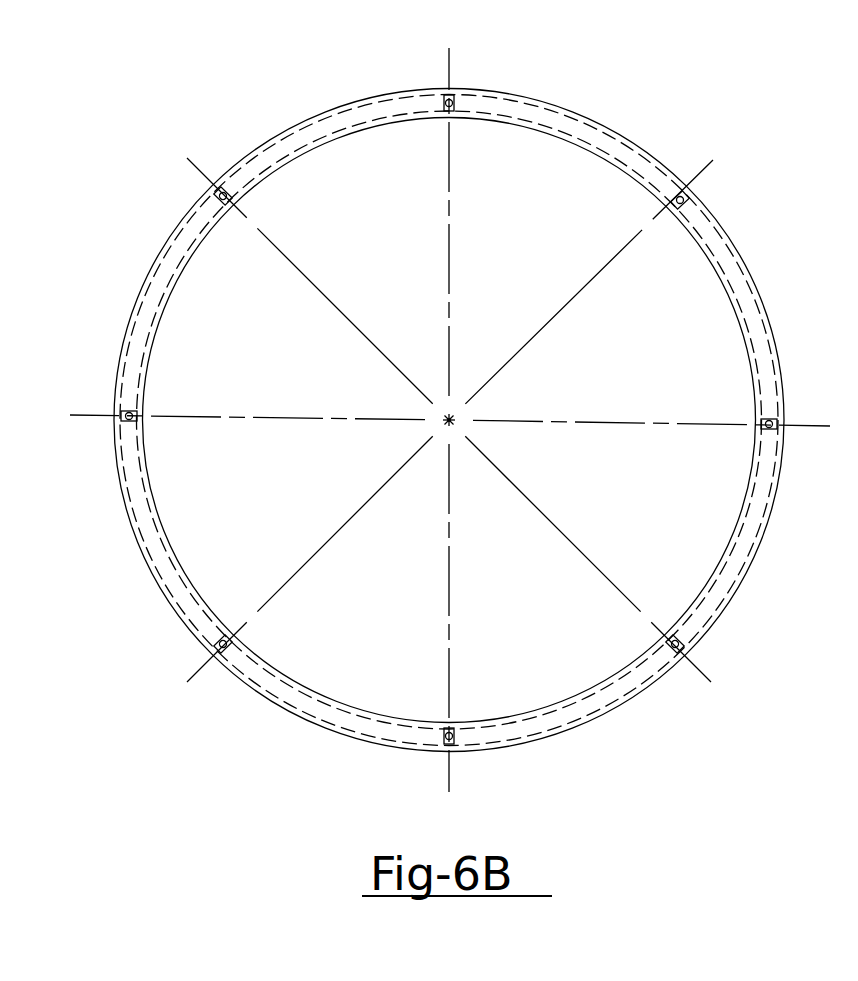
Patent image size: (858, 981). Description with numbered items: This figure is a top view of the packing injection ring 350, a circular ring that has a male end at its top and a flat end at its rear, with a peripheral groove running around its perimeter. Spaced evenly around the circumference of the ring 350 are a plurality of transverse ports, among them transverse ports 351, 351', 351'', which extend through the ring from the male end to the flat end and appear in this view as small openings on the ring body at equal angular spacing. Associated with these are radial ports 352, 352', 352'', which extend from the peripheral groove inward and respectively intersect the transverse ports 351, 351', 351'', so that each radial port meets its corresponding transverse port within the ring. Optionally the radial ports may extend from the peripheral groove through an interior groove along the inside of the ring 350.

The packing injection ring 350 is at (641, 87).
The transverse port 351 is at (480, 68).
The radial port 352 is at (492, 158).
The transverse port 351' is at (726, 190).
The radial port 352' is at (665, 259).
The transverse port 351'' is at (798, 387).
The radial port 352'' is at (725, 463).